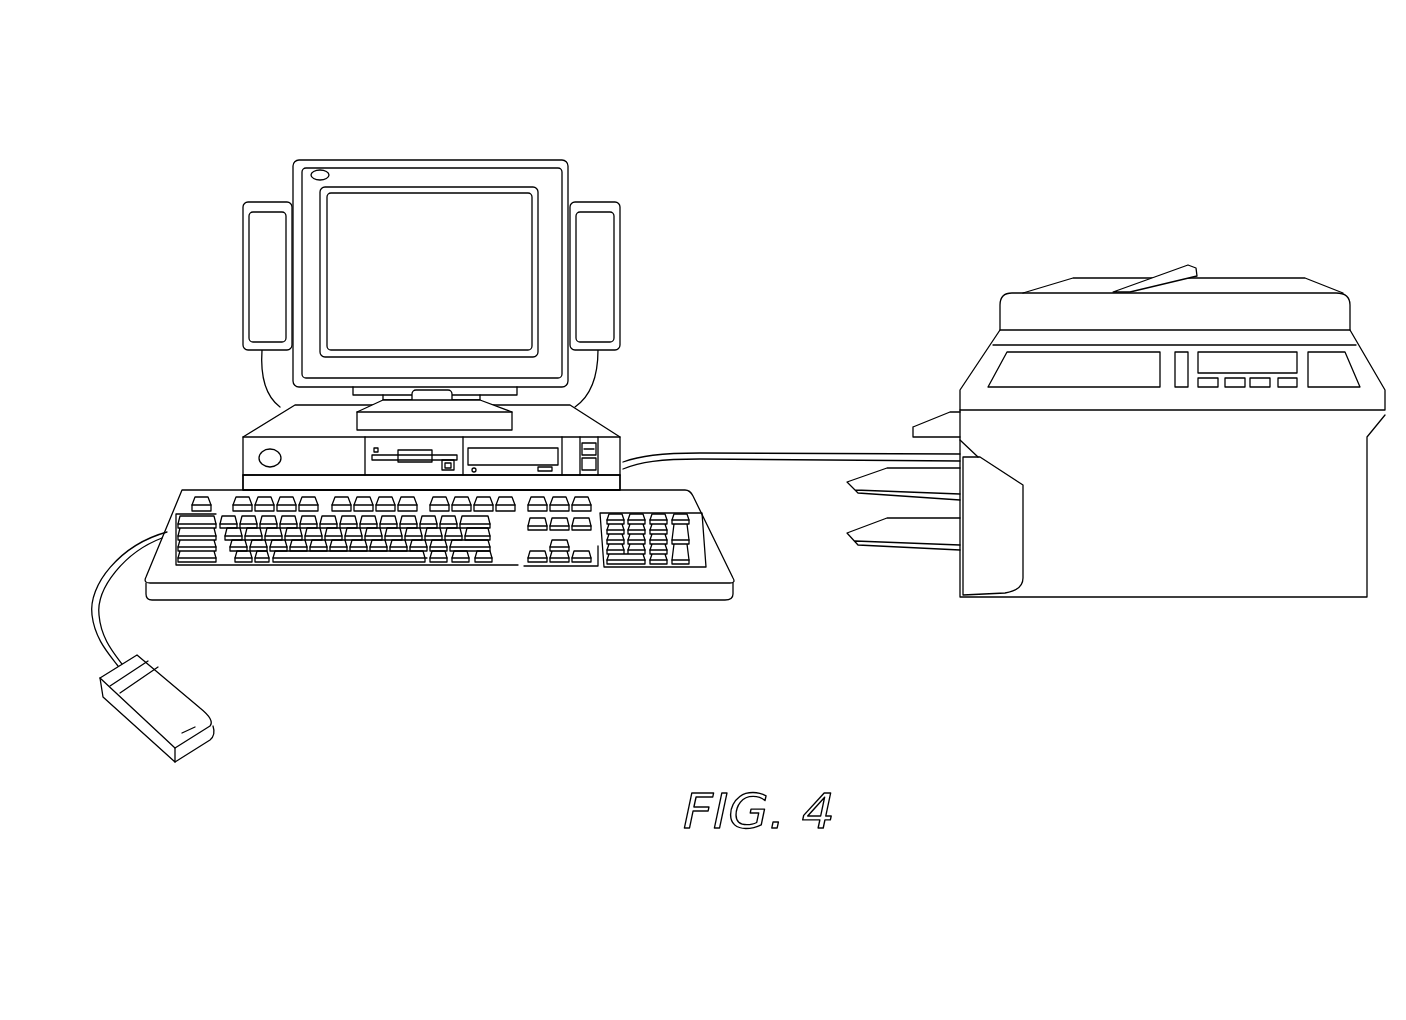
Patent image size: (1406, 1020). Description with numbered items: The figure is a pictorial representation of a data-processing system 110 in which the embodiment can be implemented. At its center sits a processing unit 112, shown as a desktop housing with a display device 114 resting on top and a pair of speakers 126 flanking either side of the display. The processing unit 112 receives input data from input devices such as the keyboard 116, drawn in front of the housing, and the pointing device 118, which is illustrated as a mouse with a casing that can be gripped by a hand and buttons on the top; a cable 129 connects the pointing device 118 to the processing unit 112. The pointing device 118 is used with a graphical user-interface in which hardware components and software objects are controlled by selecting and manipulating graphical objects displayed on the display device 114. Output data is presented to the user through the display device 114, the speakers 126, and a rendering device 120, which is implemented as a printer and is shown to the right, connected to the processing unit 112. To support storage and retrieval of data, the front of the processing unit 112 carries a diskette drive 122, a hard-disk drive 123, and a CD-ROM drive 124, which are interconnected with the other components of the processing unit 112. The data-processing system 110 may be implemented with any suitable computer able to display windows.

The data-processing system 110 is at (659, 164).
The display device 114 is at (480, 158).
The speakers 126 is at (242, 245).
The processing unit 112 is at (242, 450).
The diskette drive 122 is at (405, 452).
The hard-disk drive 123 is at (510, 478).
The CD-ROM drive 124 is at (547, 453).
The keyboard 116 is at (700, 516).
The pointing device 118 is at (183, 689).
The cable 129 is at (110, 567).
The rendering device 120 is at (1053, 283).